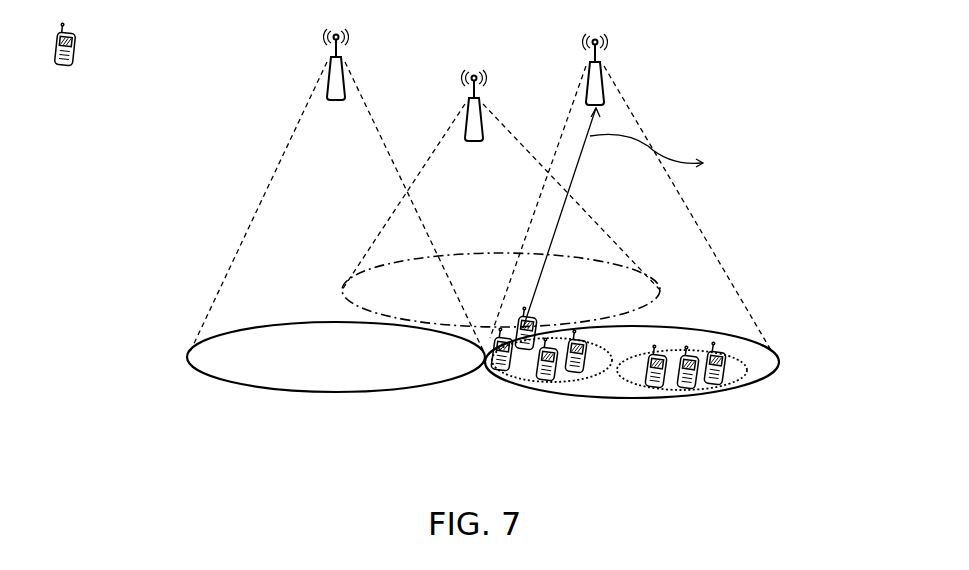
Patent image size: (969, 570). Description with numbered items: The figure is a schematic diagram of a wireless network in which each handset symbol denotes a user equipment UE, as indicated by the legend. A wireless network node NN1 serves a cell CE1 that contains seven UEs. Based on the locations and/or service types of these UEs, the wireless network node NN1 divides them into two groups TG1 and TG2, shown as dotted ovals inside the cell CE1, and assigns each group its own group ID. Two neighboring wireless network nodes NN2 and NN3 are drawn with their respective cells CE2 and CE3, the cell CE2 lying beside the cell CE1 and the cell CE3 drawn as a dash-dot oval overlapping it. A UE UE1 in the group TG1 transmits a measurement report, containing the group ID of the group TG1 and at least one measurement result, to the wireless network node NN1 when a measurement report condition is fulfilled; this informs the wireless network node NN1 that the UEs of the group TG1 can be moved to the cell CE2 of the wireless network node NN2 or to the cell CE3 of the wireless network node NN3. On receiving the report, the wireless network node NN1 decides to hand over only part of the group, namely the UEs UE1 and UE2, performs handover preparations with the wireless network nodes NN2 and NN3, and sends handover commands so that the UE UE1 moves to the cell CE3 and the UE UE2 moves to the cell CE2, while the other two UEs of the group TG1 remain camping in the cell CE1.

The user equipment UE is at (87, 44).
The wireless network node NN1 is at (600, 88).
The wireless network node NN2 is at (330, 92).
The wireless network node NN3 is at (477, 125).
The cell CE1 is at (757, 387).
The cell CE2 is at (230, 392).
The cell CE3 is at (341, 290).
The group TG1 is at (595, 378).
The group TG2 is at (730, 350).
The UE UE1 is at (530, 378).
The UE UE2 is at (490, 375).